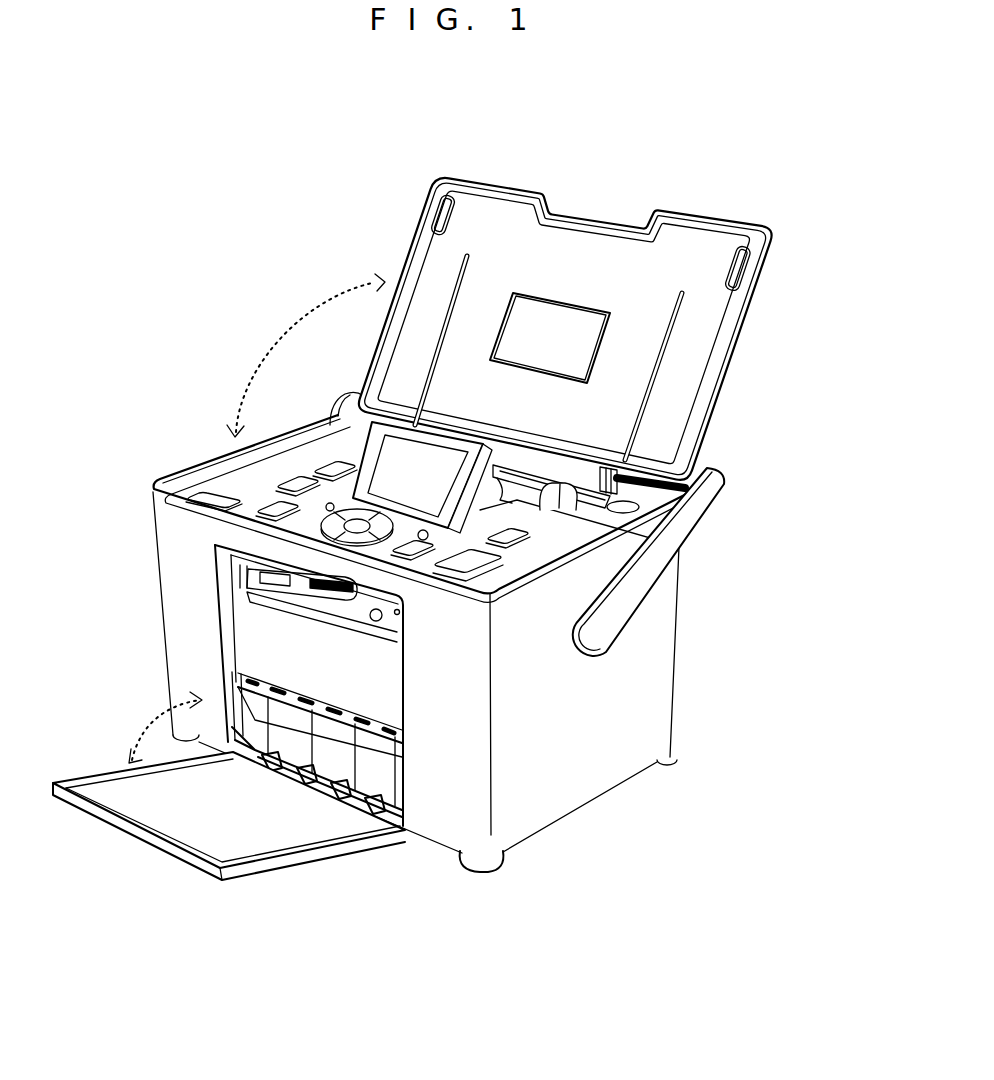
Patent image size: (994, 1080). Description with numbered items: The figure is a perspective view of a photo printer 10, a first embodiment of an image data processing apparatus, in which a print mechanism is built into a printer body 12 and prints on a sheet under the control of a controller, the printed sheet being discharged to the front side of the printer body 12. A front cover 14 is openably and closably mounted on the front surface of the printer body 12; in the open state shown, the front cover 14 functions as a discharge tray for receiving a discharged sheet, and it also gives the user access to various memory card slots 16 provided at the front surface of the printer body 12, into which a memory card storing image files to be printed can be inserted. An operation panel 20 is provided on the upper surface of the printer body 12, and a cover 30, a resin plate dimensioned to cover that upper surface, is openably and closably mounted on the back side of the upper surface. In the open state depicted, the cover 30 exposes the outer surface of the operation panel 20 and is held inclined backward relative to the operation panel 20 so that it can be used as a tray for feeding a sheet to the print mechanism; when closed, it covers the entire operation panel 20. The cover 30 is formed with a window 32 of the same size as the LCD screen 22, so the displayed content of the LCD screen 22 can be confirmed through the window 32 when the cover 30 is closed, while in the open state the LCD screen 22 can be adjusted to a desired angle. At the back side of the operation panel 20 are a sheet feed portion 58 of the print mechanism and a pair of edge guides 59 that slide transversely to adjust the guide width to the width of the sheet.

The photo printer 10 is at (808, 297).
The printer body 12 is at (647, 692).
The front cover 14 is at (275, 837).
The memory card slots 16 is at (320, 598).
The operation panel 20 is at (240, 484).
The LCD screen 22 is at (434, 488).
The cover 30 is at (700, 250).
The window 32 is at (563, 323).
The sheet feed portion 58 is at (505, 462).
The edge guides 59 is at (600, 528).